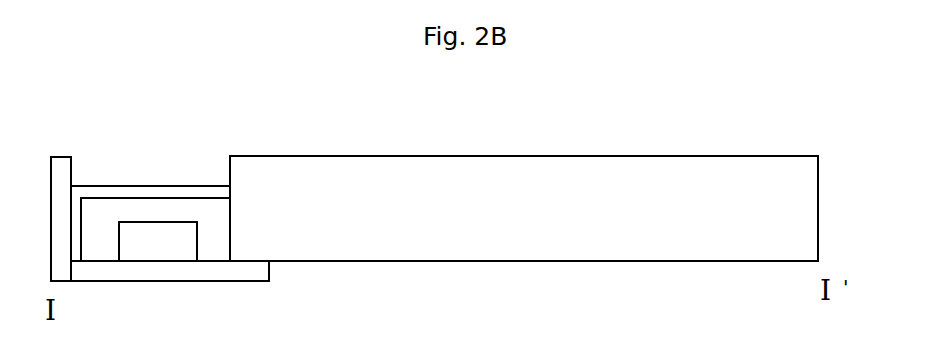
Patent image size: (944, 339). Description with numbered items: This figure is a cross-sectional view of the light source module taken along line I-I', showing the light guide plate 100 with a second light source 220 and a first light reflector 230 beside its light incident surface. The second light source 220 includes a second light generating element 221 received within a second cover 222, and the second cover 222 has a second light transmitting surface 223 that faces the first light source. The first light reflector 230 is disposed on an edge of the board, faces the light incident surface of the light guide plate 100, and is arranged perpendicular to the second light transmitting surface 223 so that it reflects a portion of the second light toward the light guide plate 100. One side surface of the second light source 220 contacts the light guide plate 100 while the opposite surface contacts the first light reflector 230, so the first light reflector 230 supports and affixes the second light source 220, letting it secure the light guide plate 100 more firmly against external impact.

The light guide plate 100 is at (808, 193).
The second light source 220 is at (178, 140).
The second light generating element 221 is at (165, 232).
The second cover 222 is at (120, 193).
The second light transmitting surface 223 is at (252, 217).
The first light reflector 230 is at (58, 165).